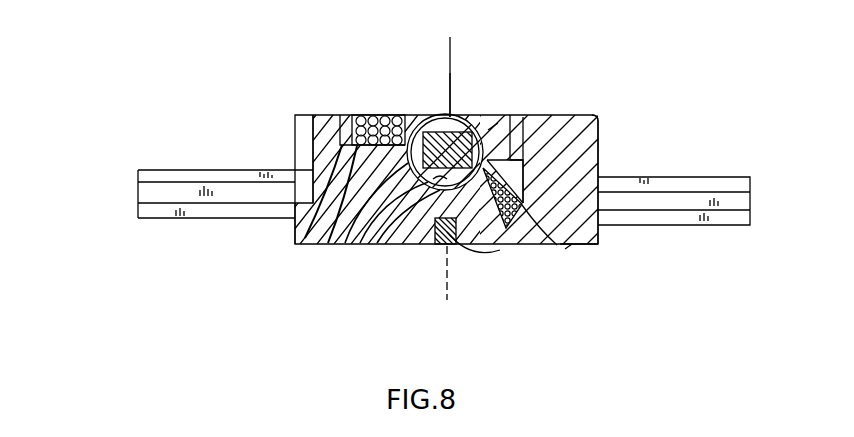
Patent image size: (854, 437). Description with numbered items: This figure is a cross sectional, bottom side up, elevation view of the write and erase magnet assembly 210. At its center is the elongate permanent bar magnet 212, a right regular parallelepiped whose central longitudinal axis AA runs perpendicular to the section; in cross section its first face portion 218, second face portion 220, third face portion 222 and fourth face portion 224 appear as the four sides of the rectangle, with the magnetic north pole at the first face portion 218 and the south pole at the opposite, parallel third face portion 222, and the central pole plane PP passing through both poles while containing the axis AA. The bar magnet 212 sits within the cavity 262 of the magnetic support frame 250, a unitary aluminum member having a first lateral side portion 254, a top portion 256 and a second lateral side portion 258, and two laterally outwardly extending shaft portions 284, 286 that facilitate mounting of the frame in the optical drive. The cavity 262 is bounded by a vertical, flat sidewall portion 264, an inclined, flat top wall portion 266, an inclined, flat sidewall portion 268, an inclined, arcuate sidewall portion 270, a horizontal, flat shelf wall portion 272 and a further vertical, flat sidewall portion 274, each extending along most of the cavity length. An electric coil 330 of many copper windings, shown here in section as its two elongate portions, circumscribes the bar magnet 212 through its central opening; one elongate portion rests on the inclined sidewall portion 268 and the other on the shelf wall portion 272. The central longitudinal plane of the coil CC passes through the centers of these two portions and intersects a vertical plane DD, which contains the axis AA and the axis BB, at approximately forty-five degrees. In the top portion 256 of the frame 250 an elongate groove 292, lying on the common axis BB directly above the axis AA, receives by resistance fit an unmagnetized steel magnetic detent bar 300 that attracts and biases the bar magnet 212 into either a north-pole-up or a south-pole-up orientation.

The write and erase magnet assembly 210 is at (207, 46).
The elongate permanent bar magnet 212 is at (457, 113).
The first face portion 218 is at (437, 116).
The second face portion 220 is at (598, 103).
The third face portion 222 is at (350, 246).
The fourth face portion 224 is at (327, 246).
The magnetic support frame 250 is at (600, 112).
The first lateral side portion 254 is at (597, 127).
The top portion 256 is at (590, 246).
The second lateral side portion 258 is at (293, 232).
The cavity 262 is at (521, 181).
The vertical, flat sidewall portion 264 is at (512, 172).
The inclined, flat top wall portion 266 is at (557, 247).
The inclined, flat sidewall portion 268 is at (507, 230).
The inclined, arcuate sidewall portion 270 is at (373, 246).
The horizontal, flat shelf wall portion 272 is at (310, 240).
The vertical, flat sidewall portion 274 is at (347, 142).
The shaft portion 284 is at (150, 220).
The shaft portion 286 is at (740, 226).
The elongate groove 292 is at (449, 246).
The magnetic detent bar 300 is at (486, 247).
The electric coil 330 is at (348, 114).
The central pole plane PP is at (450, 48).
The vertical plane DD is at (450, 73).
The central longitudinal axis AA is at (488, 130).
The common axis BB is at (447, 326).
The central longitudinal plane of the coil CC is at (565, 249).